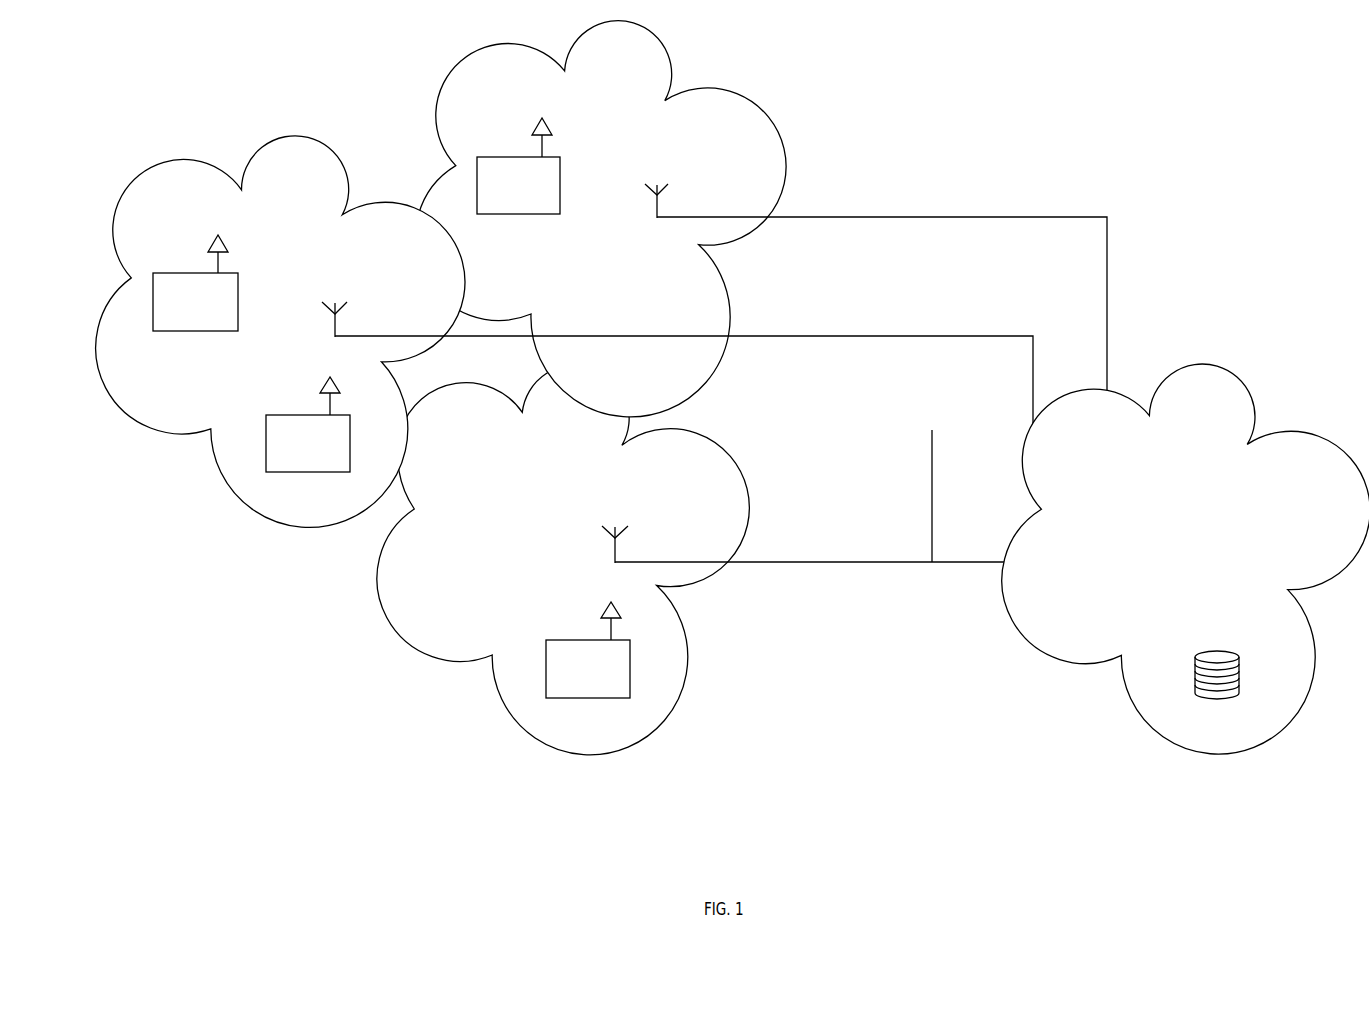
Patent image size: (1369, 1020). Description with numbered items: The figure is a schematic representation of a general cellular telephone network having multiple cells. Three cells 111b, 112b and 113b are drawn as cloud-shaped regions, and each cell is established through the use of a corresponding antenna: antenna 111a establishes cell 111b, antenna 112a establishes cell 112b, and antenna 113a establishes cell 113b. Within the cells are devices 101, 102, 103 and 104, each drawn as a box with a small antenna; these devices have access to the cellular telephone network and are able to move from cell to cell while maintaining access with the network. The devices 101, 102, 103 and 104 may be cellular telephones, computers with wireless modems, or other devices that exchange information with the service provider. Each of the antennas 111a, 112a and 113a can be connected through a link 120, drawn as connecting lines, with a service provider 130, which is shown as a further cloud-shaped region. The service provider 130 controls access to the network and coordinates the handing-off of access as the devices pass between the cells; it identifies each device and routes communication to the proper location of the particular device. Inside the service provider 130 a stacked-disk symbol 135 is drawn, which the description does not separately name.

The device 101 is at (196, 332).
The device 102 is at (305, 415).
The device 103 is at (585, 640).
The device 104 is at (518, 214).
The antenna 111a is at (335, 322).
The cell 111b is at (331, 512).
The antenna 112a is at (615, 551).
The cell 112b is at (487, 445).
The antenna 113a is at (657, 200).
The cell 113b is at (637, 80).
The link 120 is at (1107, 357).
The service provider 130 is at (1088, 597).
The database 135 is at (1225, 640).